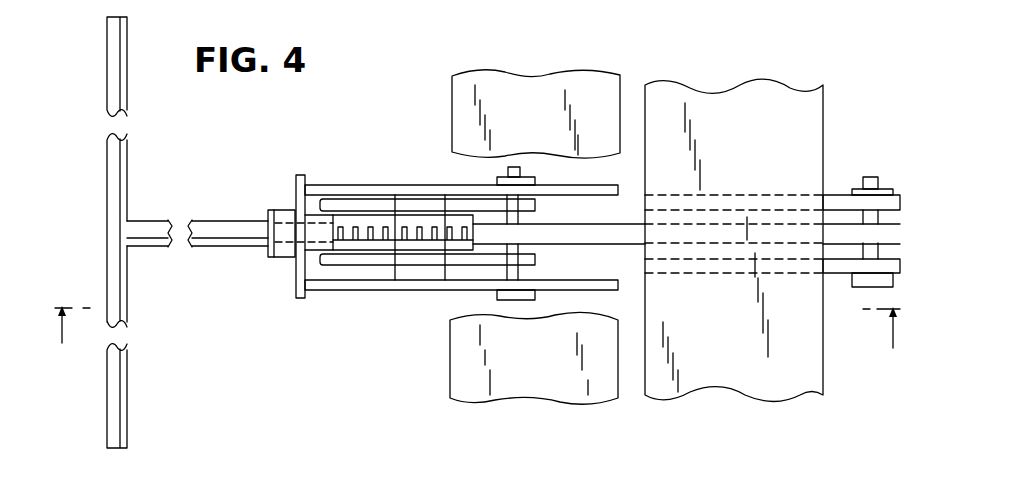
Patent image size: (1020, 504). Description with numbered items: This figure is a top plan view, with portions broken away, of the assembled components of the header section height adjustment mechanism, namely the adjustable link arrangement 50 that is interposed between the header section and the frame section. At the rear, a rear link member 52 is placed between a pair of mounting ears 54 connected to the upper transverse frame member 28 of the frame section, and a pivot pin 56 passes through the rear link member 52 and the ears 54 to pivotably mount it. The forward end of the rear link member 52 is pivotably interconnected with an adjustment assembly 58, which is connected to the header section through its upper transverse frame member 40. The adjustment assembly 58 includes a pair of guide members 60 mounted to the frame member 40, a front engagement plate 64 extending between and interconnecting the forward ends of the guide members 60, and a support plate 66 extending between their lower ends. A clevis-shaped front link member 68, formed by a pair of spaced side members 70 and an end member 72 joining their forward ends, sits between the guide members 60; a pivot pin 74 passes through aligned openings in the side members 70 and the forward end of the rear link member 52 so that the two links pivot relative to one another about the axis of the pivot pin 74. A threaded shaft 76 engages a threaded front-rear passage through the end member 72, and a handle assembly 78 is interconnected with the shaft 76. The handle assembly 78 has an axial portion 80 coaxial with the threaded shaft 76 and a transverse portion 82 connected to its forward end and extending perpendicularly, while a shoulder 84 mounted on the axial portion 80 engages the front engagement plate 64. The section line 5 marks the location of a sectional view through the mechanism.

The section line 5- 5 is at (477, 341).
The upper transverse frame member 28 is at (825, 372).
The upper transverse frame member 40 is at (452, 90).
The adjustable link arrangement 50 is at (555, 258).
The rear link member 52 is at (901, 210).
The mounting ears 54 is at (903, 195).
The pivot pin 56 is at (880, 252).
The adjustment assembly 58 is at (414, 227).
The guide members 60 is at (318, 184).
The front engagement plate 64 is at (298, 300).
The support plate 66 is at (391, 275).
The front link member 68 is at (377, 194).
The side members 70 is at (452, 197).
The end member 72 is at (318, 256).
The pivot pin 74 is at (522, 276).
The threaded shaft 76 is at (358, 250).
The handle assembly 78 is at (157, 232).
The axial portion 80 is at (143, 221).
The transverse portion 82 is at (107, 28).
The shoulder 84 is at (280, 258).